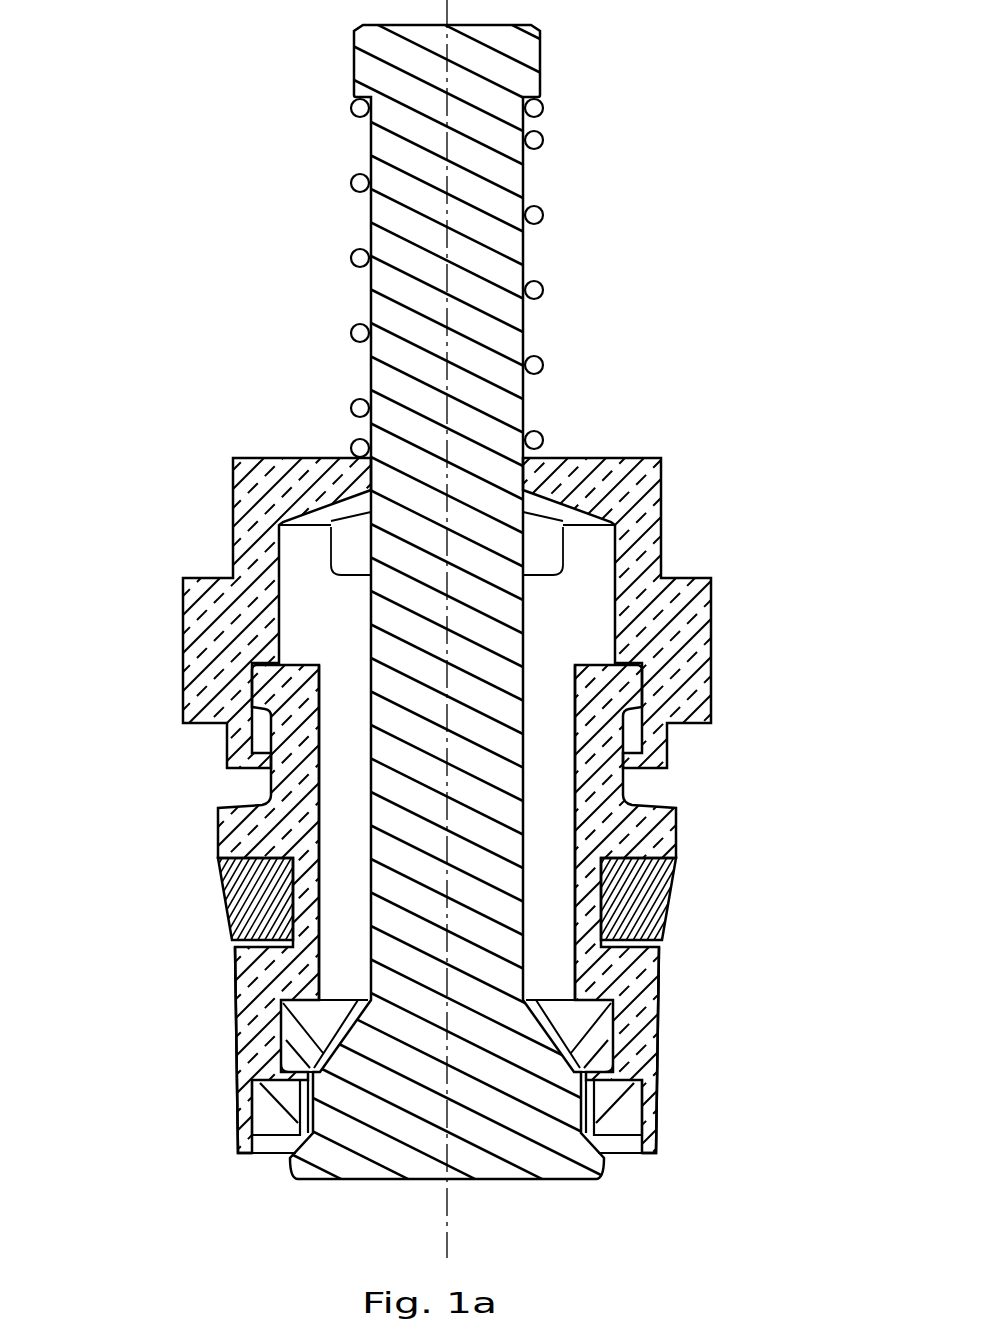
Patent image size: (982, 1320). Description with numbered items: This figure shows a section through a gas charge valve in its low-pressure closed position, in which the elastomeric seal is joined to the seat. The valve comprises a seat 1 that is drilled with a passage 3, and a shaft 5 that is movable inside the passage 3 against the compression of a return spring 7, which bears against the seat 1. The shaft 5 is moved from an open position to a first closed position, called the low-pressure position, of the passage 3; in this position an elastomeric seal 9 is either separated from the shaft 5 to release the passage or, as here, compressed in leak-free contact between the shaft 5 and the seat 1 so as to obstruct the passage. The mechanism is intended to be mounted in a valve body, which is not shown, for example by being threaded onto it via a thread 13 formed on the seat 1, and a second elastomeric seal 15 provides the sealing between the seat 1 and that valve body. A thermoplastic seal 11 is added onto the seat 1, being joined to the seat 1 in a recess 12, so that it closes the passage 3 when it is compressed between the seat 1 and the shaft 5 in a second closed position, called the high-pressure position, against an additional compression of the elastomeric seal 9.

The seat 1 is at (480, 755).
The passage 3 is at (538, 750).
The shaft 5 is at (466, 660).
The return spring 7 is at (364, 278).
The elastomeric seal 9 is at (509, 1044).
The thermoplastic seal 11 is at (371, 1146).
The recess 12 is at (500, 1050).
The thread 13 is at (376, 755).
The second elastomeric seal 15 is at (391, 895).